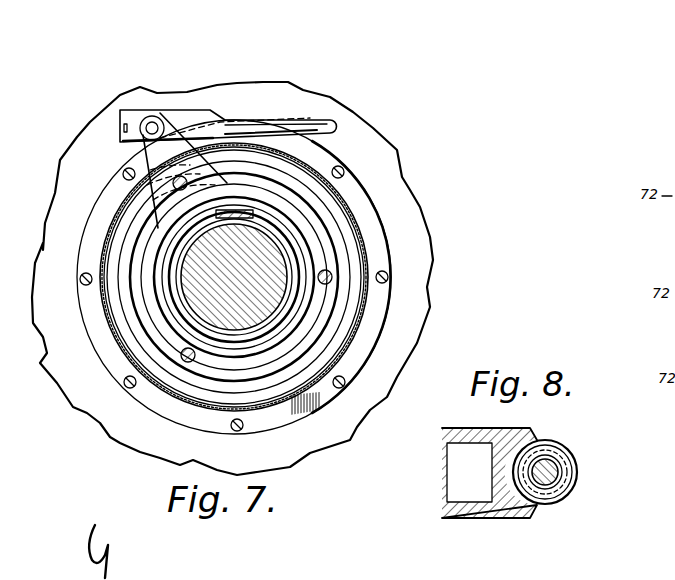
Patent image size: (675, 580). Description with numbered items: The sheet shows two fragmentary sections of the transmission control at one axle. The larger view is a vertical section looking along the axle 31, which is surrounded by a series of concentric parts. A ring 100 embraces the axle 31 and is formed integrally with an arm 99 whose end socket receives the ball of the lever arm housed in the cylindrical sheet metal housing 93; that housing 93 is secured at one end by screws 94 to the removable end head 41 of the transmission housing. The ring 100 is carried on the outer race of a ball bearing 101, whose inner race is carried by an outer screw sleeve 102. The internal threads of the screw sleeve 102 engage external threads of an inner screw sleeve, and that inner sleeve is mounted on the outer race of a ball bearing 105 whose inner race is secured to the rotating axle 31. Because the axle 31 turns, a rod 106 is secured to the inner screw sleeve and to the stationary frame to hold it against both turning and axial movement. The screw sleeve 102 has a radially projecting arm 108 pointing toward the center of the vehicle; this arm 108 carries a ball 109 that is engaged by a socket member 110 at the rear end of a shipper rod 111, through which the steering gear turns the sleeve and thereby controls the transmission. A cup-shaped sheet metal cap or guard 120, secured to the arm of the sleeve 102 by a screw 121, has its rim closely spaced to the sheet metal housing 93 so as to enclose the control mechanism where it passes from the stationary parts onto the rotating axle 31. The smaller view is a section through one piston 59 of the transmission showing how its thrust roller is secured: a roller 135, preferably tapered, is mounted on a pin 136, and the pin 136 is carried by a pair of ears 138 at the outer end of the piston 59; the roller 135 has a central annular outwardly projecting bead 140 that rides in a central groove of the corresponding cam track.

In FIG. 7, the axle 31 is at (185, 310).
In FIG. 7, the removable end head 41 is at (387, 158).
In FIG. 7, the cylindrical sheet metal housing 93 is at (100, 302).
In FIG. 7, the screws 94 is at (128, 390).
In FIG. 7, the arm 99 is at (324, 152).
In FIG. 7, the ring 100 is at (305, 204).
In FIG. 7, the ball bearing 101 is at (330, 312).
In FIG. 7, the outer screw sleeve 102 is at (313, 246).
In FIG. 7, the ball bearing 105 is at (278, 330).
In FIG. 7, the rod 106 is at (240, 212).
In FIG. 7, the radially projecting arm 108 is at (143, 152).
In FIG. 7, the ball 109 is at (158, 110).
In FIG. 7, the socket member 110 is at (182, 112).
In FIG. 7, the shipper rod 111 is at (315, 115).
In FIG. 7, the cup-shaped sheet metal cap or guard 120 is at (102, 253).
In FIG. 7, the screw 121 is at (175, 184).
In FIG. 8, the piston 59 is at (475, 515).
In FIG. 8, the roller 135 is at (568, 497).
In FIG. 8, the pin 136 is at (538, 483).
In FIG. 8, the ears 138 is at (578, 465).
In FIG. 8, the central annular outwardly projecting bead 140 is at (572, 480).